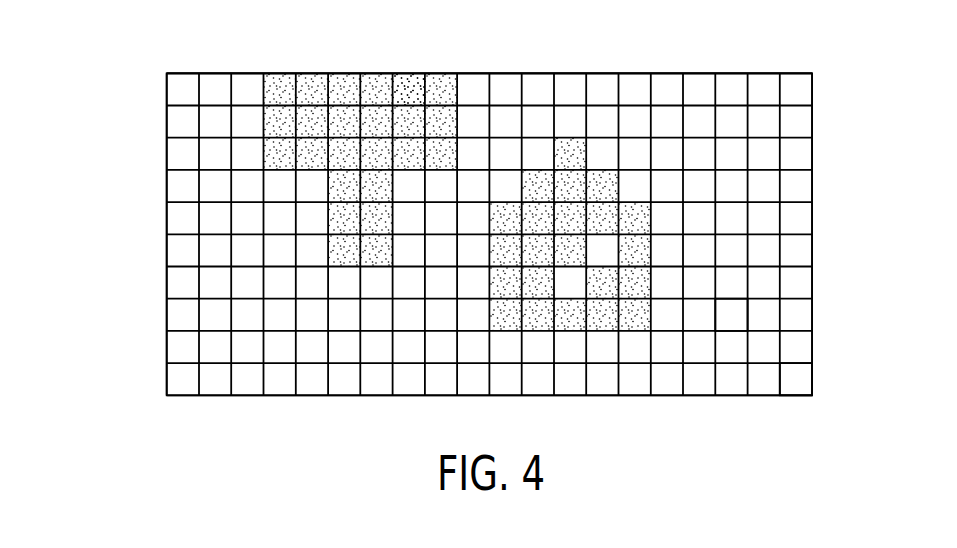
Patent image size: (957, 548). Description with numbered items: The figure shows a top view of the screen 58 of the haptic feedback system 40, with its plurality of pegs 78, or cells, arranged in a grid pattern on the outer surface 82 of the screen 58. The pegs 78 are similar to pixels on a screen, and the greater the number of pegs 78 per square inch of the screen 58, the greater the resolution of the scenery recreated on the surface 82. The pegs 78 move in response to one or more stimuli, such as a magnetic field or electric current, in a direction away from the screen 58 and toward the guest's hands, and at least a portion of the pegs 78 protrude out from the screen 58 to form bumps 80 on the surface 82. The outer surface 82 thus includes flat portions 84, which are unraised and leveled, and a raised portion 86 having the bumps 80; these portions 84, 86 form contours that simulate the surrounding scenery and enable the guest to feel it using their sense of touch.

The haptic feedback system 40 is at (146, 233).
The screen 58 is at (815, 185).
The pegs 78 is at (730, 313).
The bumps 80 is at (408, 87).
The outer surface 82 is at (812, 88).
The flat portions 84 is at (807, 348).
The raised portion 86 is at (347, 84).